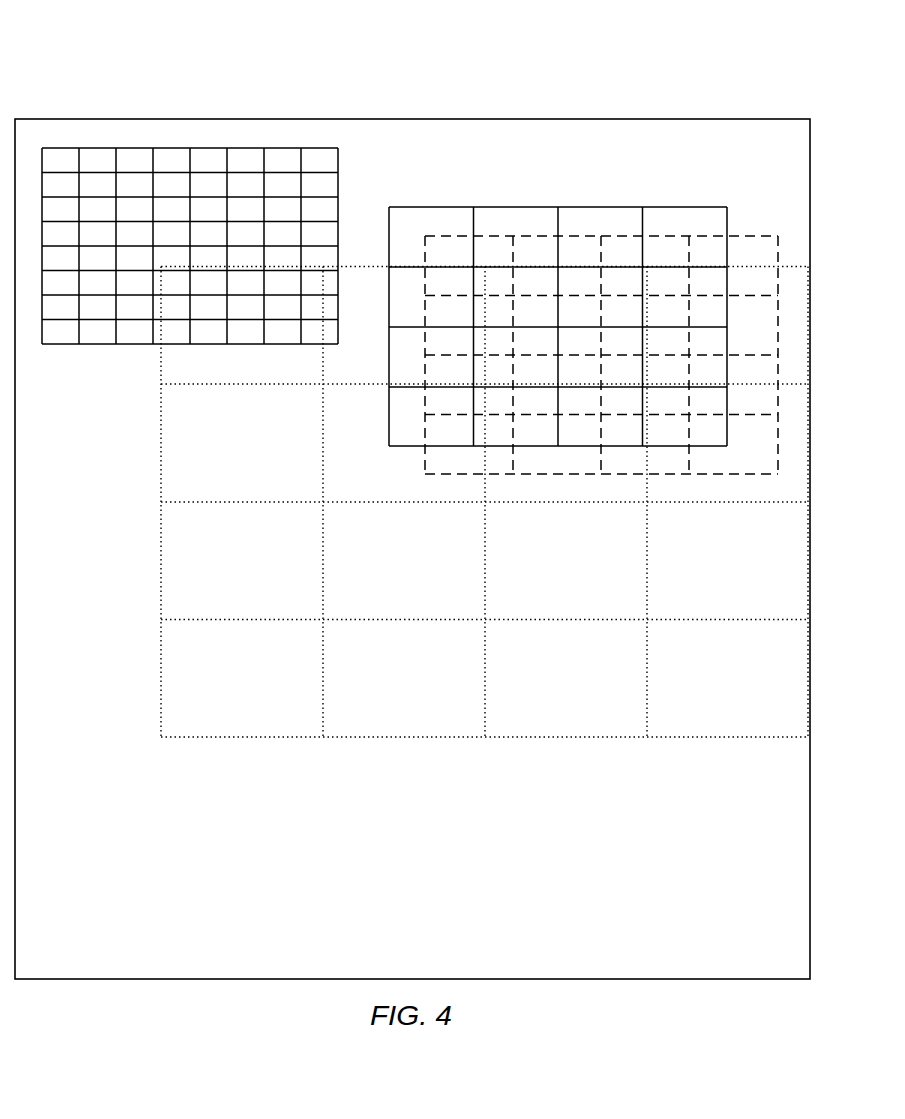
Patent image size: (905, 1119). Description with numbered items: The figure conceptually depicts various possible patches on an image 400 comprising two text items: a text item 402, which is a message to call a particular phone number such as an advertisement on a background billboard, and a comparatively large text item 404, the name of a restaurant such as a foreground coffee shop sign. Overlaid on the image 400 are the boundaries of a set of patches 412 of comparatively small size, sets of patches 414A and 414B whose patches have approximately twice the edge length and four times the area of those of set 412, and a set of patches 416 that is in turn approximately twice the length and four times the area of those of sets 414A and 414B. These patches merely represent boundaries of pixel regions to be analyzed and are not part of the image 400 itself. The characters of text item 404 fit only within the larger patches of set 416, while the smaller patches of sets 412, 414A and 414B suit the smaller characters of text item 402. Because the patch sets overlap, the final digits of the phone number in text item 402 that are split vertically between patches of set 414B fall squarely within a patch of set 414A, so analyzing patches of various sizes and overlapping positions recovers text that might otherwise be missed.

The image 400 is at (440, 117).
The text item 402 is at (277, 168).
The text item 404 is at (175, 488).
The set of patches 412 is at (45, 147).
The set of patches 414A is at (727, 207).
The set of patches 414B is at (778, 468).
The set of patches 416 is at (161, 738).